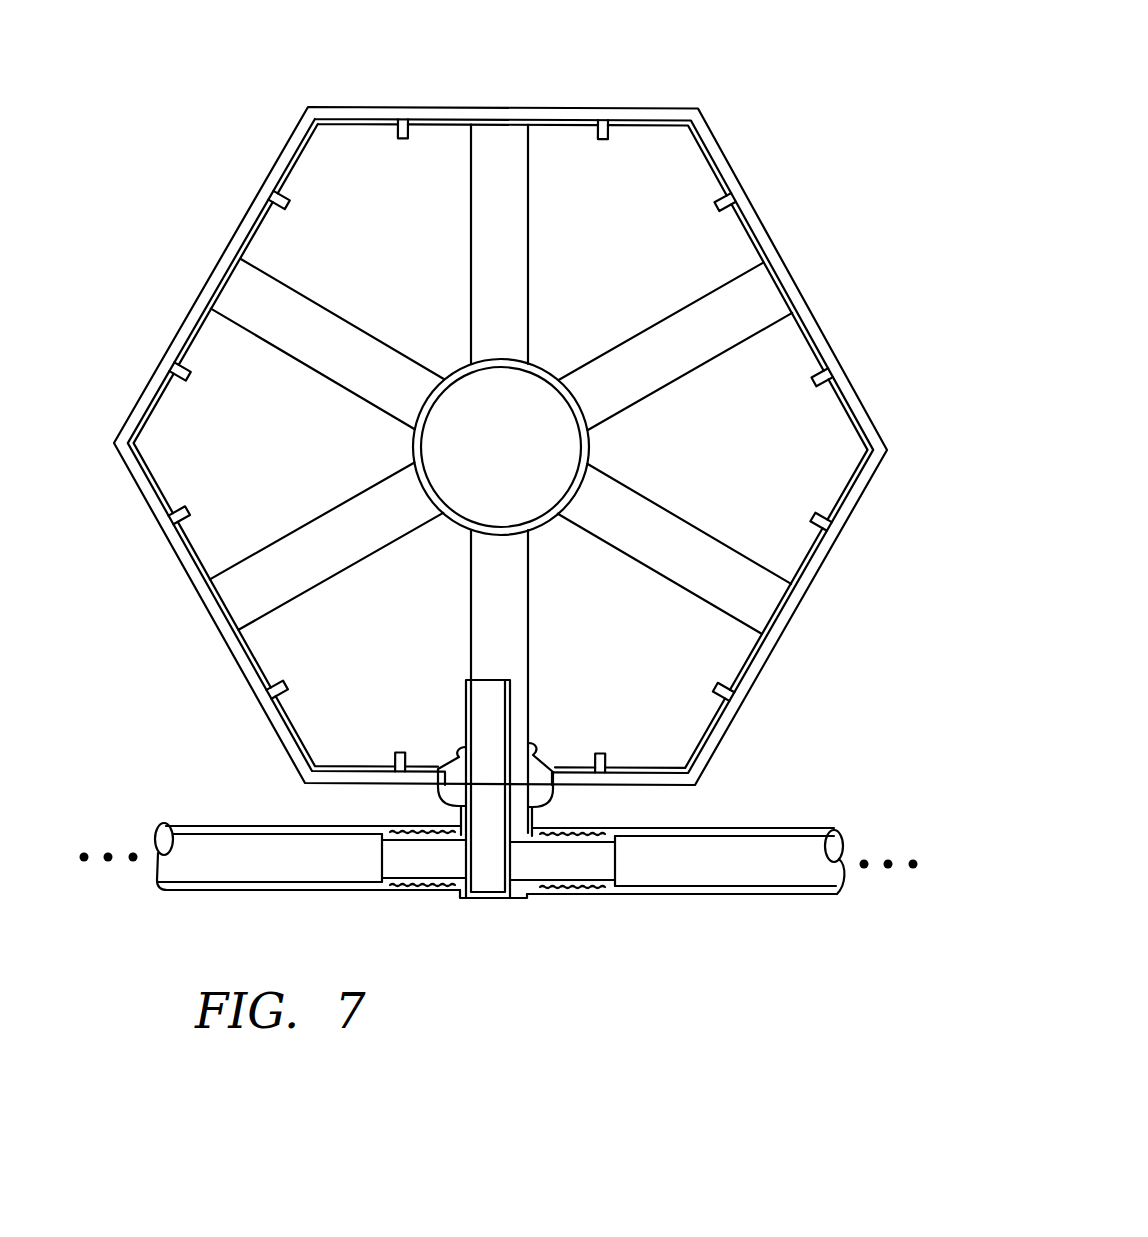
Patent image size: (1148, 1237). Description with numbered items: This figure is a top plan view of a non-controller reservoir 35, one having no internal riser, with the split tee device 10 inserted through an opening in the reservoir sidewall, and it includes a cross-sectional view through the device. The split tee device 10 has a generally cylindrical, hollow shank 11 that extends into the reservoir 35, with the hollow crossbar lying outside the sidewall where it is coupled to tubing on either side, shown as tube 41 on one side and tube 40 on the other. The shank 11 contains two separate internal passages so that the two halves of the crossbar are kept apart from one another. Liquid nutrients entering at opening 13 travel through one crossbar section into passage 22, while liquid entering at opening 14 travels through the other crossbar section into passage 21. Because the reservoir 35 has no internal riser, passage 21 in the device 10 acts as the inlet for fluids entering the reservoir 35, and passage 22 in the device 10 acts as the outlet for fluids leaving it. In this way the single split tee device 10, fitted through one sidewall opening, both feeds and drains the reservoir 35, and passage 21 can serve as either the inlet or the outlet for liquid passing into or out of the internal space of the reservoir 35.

The reservoir 35 is at (234, 200).
The shank 11 is at (557, 741).
The passage 21 is at (484, 692).
The passage 22 is at (516, 752).
The split tee device 10 is at (500, 846).
The opening 13 is at (395, 864).
The opening 14 is at (603, 865).
The left tube 41 is at (210, 848).
The right tube 40 is at (788, 850).